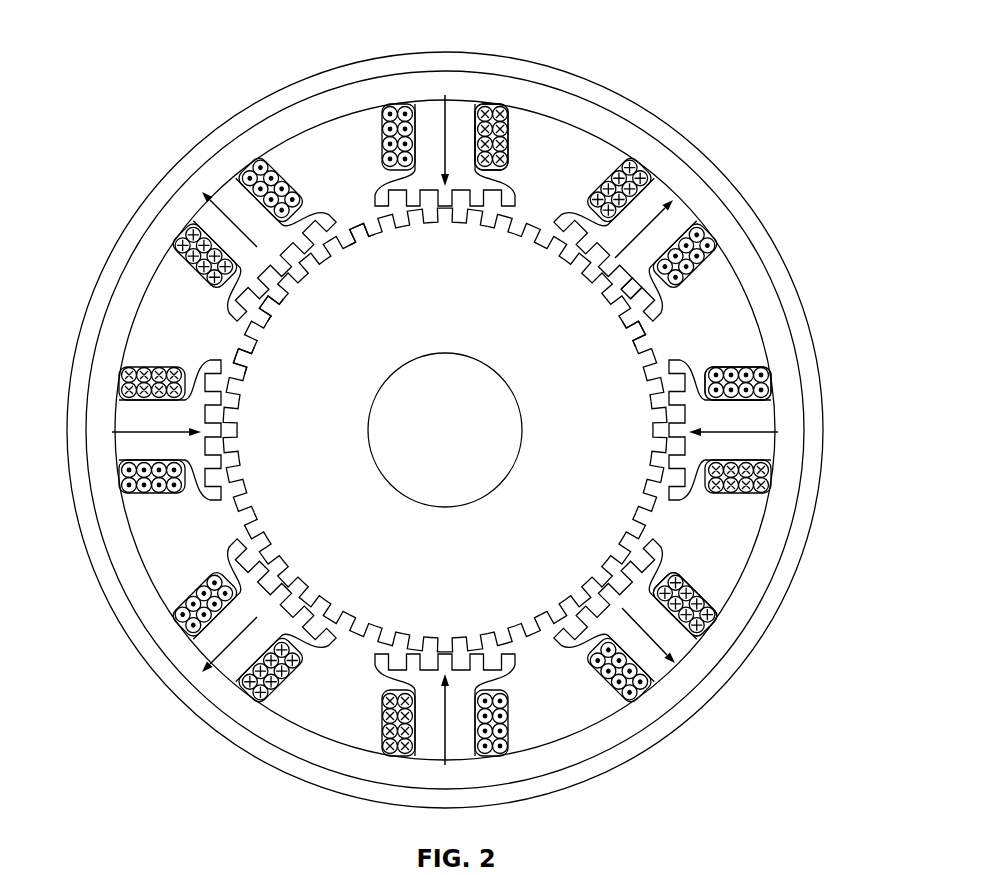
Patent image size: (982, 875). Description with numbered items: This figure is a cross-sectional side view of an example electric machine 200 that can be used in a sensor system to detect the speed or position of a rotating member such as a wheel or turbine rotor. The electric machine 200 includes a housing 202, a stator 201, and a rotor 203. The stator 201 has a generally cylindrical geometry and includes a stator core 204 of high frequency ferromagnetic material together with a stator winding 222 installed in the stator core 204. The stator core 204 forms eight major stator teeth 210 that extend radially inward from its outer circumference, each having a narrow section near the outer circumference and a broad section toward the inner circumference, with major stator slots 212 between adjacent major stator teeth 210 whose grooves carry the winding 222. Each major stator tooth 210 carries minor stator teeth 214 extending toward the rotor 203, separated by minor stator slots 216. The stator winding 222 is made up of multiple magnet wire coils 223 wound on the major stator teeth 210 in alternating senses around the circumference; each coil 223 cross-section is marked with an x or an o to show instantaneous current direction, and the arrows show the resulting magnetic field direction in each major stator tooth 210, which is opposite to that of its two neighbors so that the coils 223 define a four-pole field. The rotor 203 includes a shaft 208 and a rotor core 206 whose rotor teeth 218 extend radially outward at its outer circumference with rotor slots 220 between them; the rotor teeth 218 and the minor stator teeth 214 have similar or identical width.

The electric machine 200 is at (136, 34).
The stator 201 is at (163, 181).
The housing 202 is at (247, 100).
The rotor 203 is at (346, 206).
The stator core 204 is at (100, 323).
The rotor core 206 is at (426, 583).
The shaft 208 is at (426, 442).
The major stator teeth 210 is at (212, 652).
The major stator slots 212 is at (170, 533).
The minor stator teeth 214 is at (637, 325).
The minor stator slots 216 is at (638, 305).
The rotor teeth 218 is at (268, 293).
The rotor slots 220 is at (238, 350).
The stator winding 222 is at (535, 138).
The magnet wire coils 223 is at (742, 358).